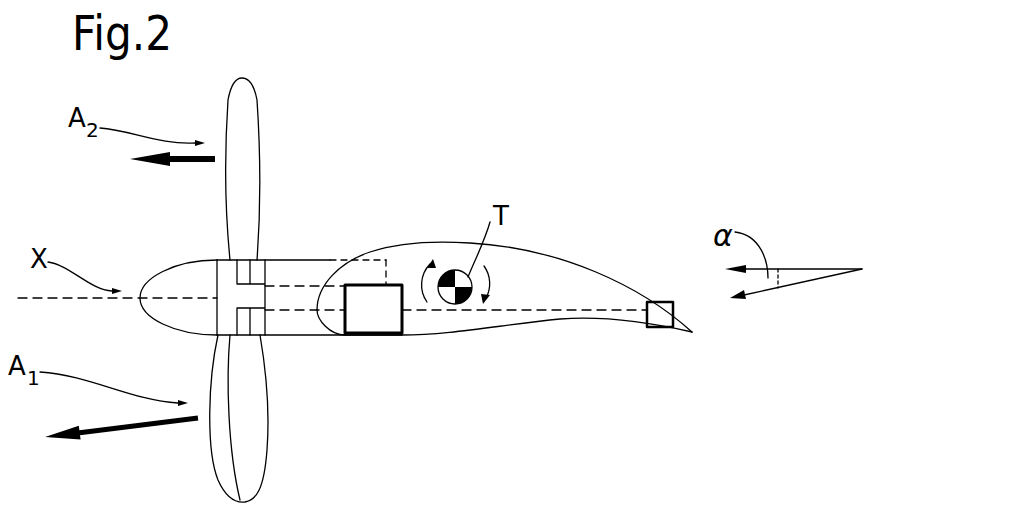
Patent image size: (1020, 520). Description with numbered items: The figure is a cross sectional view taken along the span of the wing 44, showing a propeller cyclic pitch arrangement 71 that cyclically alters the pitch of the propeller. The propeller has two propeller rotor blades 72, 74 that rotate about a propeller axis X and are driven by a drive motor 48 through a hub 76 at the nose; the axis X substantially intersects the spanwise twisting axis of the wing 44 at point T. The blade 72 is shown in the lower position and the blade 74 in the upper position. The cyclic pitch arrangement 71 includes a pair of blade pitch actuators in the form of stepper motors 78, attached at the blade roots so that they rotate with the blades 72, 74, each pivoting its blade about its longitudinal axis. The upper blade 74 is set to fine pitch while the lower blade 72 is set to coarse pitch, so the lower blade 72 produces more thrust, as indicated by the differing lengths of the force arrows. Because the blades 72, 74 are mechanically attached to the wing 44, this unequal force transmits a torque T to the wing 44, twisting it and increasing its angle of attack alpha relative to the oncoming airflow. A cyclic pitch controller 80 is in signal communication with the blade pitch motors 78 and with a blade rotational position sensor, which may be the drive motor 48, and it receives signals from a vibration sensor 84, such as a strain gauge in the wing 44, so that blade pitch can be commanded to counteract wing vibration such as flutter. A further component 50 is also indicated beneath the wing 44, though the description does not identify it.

The wing 44 is at (577, 262).
The drive motor 48 is at (337, 262).
The propulsion unit 50 is at (345, 396).
The propeller cyclic pitch arrangement 71 is at (305, 238).
The propeller rotor blade 72 is at (268, 428).
The propeller rotor blade 74 is at (260, 174).
The hub 76 is at (166, 274).
The blade pitch actuator 78 is at (252, 277).
The cyclic pitch controller 80 is at (402, 322).
The vibration sensor 84 is at (667, 302).